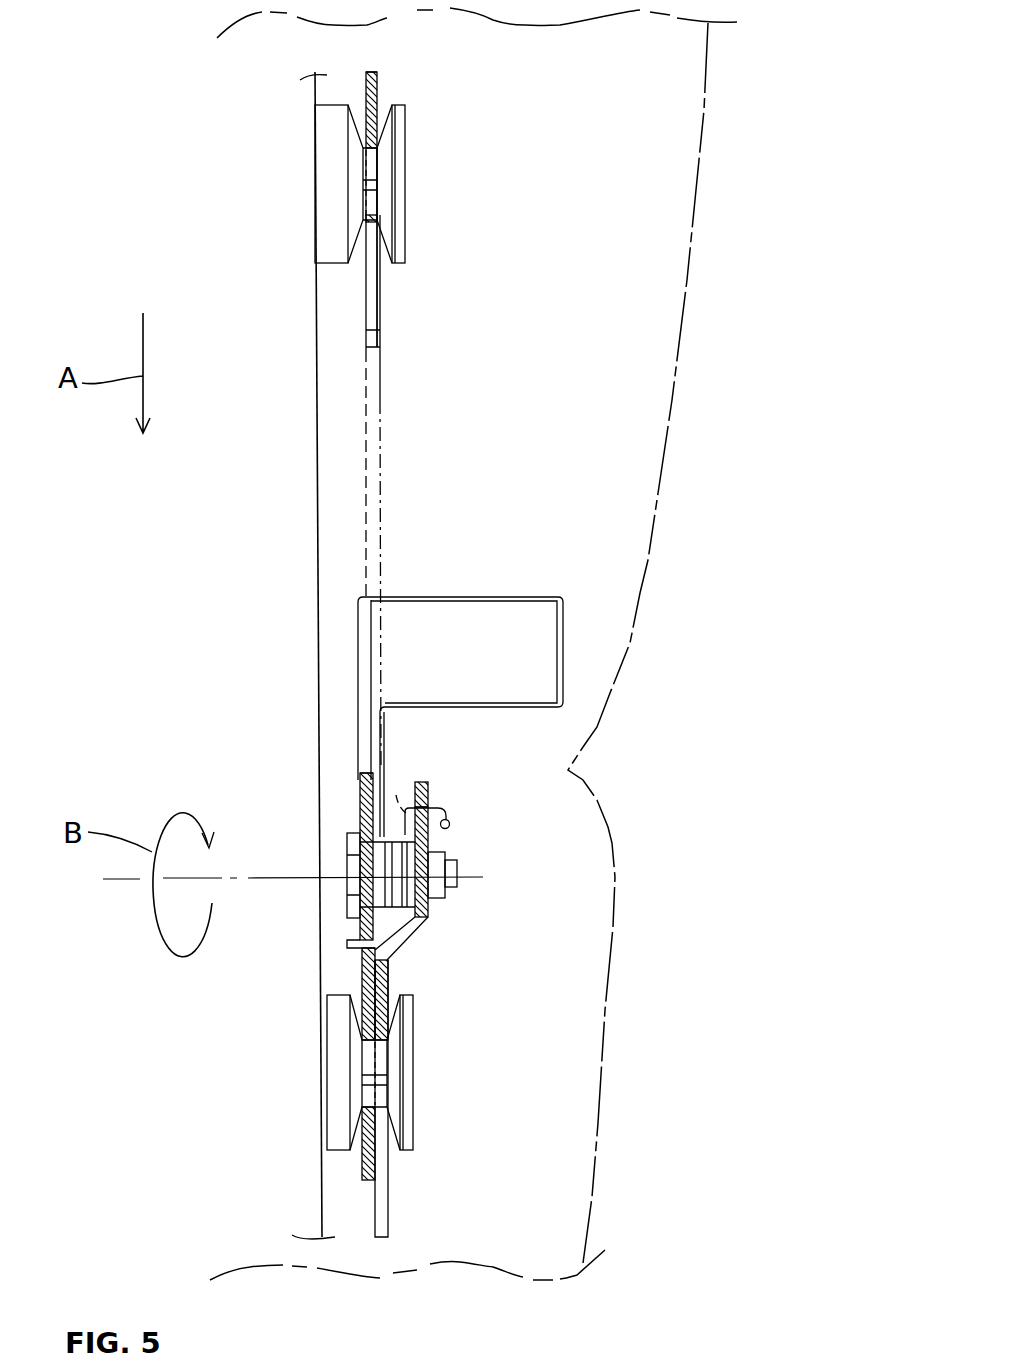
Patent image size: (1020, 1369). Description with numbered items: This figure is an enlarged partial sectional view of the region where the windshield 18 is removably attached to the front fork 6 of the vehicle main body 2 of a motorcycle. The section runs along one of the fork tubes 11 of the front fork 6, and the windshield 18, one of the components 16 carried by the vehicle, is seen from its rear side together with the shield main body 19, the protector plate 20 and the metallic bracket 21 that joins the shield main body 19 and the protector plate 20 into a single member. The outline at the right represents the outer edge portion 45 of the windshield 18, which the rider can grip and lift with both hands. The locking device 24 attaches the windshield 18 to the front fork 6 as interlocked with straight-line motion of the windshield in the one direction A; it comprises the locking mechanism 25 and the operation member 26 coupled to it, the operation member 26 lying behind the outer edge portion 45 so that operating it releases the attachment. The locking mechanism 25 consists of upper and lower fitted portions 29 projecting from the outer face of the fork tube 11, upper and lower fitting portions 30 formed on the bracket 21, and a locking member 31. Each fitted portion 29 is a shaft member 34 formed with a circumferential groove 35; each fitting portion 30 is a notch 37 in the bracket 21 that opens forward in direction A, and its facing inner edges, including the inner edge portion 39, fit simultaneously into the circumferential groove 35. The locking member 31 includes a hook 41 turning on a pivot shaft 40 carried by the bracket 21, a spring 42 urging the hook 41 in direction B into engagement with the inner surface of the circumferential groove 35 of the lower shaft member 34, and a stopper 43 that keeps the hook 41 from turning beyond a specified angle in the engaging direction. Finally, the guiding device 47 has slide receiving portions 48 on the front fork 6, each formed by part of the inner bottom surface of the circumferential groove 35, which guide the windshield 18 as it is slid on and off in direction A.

The vehicle main body 2 is at (330, 472).
The front fork 6 is at (322, 510).
The fork tubes 11 is at (288, 578).
The components 16 is at (712, 207).
The windshield 18 is at (690, 279).
The shield main body 19 is at (682, 338).
The protector plates 20 is at (597, 1197).
The brackets 21 is at (390, 410).
The locking device 24 is at (515, 902).
The locking mechanism 25 is at (360, 968).
The operation member 26 is at (540, 618).
The fitted portions 29 is at (470, 627).
The fitting portions 30 is at (382, 290).
The locking member 31 is at (360, 968).
The shaft member 34 is at (405, 153).
The circumferential groove 35 is at (380, 220).
The notch 37 is at (382, 290).
The inner edge portion 39 is at (378, 333).
The pivot shaft 40 is at (462, 866).
The hook 41 is at (362, 1168).
The spring 42 is at (450, 823).
The stopper 43 is at (352, 1148).
The outer edge portions 45 is at (600, 648).
The guiding device 47 is at (368, 167).
The slide receiving portions 48 is at (372, 188).